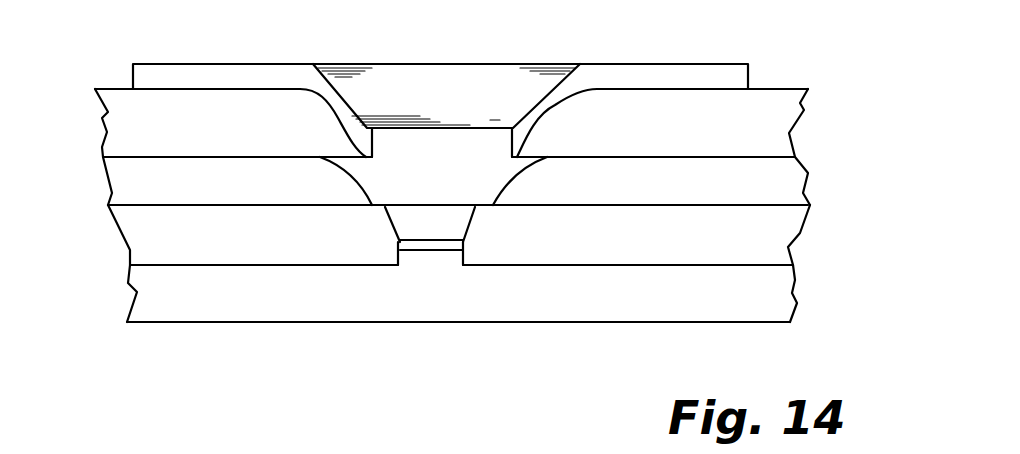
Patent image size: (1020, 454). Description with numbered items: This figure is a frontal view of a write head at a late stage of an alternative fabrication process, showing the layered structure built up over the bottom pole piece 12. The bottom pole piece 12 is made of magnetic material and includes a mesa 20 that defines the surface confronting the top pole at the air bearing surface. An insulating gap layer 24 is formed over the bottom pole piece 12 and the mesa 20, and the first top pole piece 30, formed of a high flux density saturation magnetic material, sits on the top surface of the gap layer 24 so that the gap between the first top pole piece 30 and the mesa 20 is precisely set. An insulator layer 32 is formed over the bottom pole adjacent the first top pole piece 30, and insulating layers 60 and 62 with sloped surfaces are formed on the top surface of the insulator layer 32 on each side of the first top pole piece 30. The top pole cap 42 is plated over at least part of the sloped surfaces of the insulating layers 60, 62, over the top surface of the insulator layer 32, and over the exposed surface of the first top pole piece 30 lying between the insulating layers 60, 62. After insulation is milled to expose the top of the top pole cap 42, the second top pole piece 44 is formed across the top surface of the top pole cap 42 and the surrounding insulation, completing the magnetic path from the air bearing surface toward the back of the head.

The bottom pole piece 12 is at (792, 293).
The mesa 20 is at (466, 264).
The insulating gap layer 24 is at (432, 257).
The first top pole piece 30 is at (383, 228).
The insulator layer 32 is at (800, 233).
The top pole cap 42 is at (395, 170).
The second top pole piece 44 is at (680, 63).
The insulating layer 60 is at (118, 195).
The insulating layer 62 is at (808, 173).